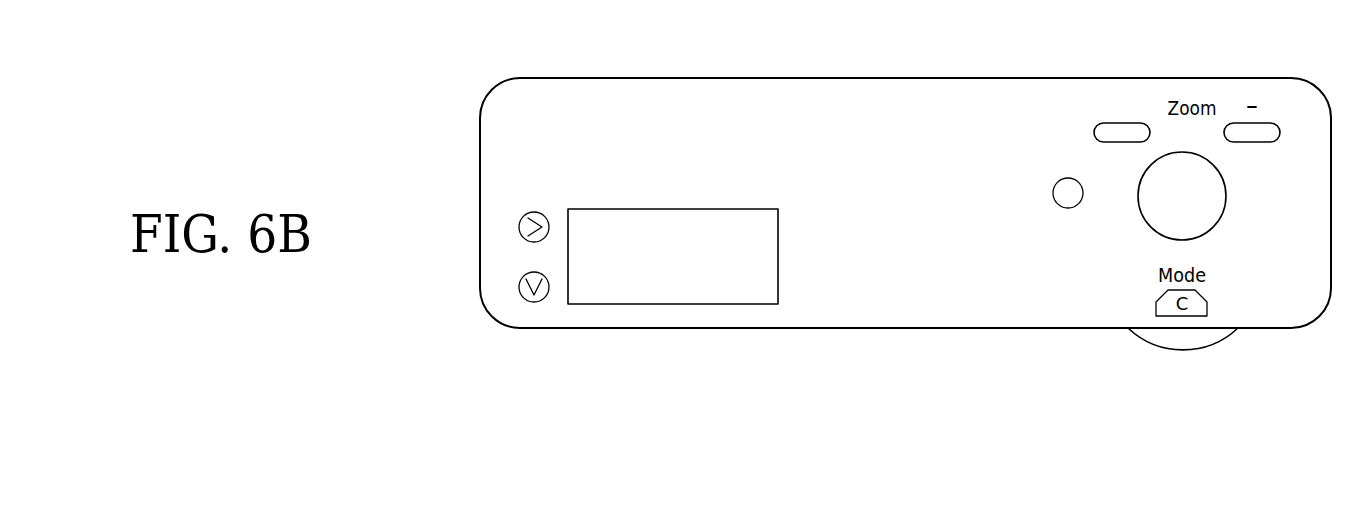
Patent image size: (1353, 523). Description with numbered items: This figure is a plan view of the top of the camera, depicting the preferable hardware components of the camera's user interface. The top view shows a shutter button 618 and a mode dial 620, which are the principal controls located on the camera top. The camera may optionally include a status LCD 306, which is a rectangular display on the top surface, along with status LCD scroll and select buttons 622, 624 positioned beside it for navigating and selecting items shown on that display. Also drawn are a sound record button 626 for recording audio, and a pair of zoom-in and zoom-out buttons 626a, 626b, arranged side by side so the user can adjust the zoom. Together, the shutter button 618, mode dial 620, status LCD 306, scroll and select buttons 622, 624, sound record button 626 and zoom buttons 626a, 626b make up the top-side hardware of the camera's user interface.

The status LCD 306 is at (673, 305).
The shutter button 618 is at (1148, 227).
The mode dial 620 is at (1220, 344).
The status LCD scroll button 622 is at (518, 227).
The status LCD select button 624 is at (518, 287).
The sound record button 626 is at (1055, 184).
The zoom-in button 626a is at (1142, 123).
The zoom-out button 626b is at (1273, 123).